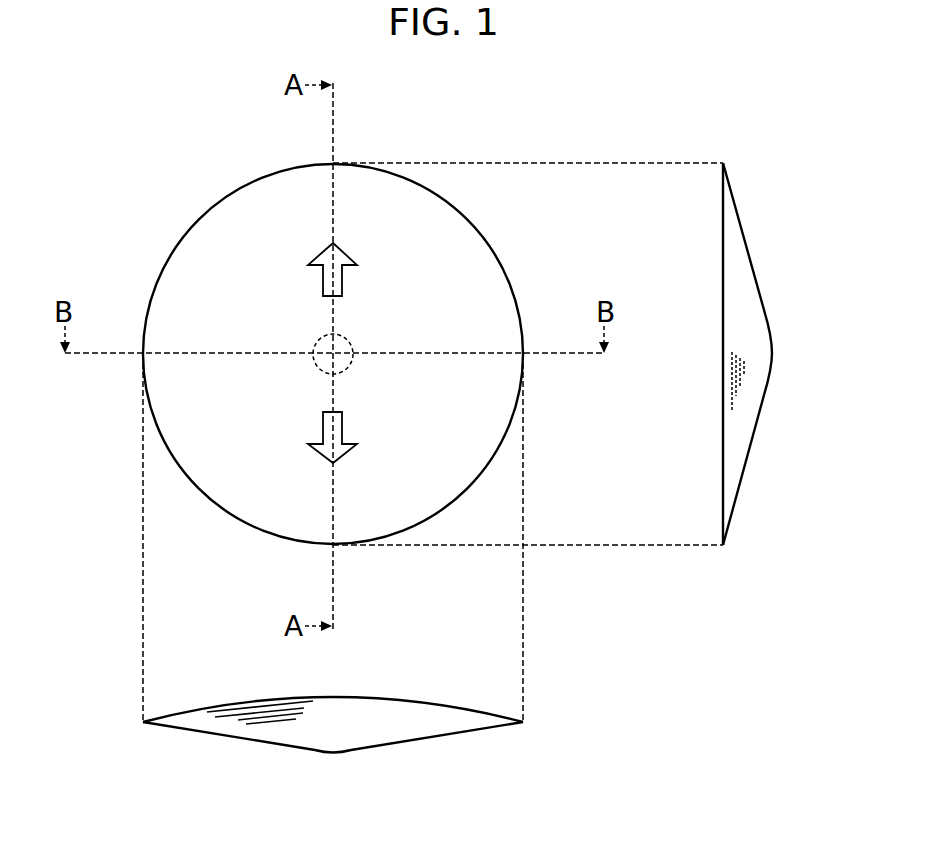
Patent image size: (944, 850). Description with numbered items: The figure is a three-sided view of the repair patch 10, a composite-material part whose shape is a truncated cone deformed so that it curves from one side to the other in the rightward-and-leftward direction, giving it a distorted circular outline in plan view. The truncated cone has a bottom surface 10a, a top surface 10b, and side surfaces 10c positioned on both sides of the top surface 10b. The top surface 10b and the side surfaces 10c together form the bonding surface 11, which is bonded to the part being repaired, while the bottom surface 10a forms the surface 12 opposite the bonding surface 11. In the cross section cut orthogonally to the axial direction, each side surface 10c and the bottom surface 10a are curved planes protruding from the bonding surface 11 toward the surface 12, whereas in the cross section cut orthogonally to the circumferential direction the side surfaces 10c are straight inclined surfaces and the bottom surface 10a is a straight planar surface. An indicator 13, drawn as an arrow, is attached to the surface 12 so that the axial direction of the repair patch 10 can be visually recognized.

The repair patch 10 is at (444, 122).
The bottom surface 10a is at (723, 276).
The top surface 10b is at (772, 354).
The side surface 10c is at (758, 283).
The bonding surface 11 is at (752, 446).
The surface 12 is at (244, 202).
The indicator 13 is at (343, 426).